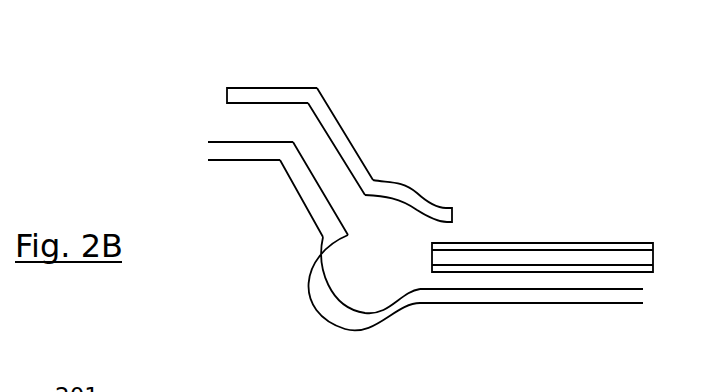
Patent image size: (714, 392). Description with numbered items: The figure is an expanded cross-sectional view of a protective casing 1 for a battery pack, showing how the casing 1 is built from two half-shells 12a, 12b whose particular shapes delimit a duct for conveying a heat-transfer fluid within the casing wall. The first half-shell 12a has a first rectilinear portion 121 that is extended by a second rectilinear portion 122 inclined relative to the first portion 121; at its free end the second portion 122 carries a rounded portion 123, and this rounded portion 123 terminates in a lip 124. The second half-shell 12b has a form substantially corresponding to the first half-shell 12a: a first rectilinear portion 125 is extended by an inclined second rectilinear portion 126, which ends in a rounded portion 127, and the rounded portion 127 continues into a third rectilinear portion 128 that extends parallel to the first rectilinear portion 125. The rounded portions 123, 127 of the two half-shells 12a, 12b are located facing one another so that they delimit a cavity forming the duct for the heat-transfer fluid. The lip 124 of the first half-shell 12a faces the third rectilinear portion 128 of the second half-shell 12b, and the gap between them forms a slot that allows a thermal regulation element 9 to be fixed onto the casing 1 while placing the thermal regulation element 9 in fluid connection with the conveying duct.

The protective casing 1 is at (157, 127).
The thermal regulation element 9 is at (625, 260).
The first half-shell 12a is at (484, 185).
The second half-shell 12b is at (58, 0).
The first rectilinear portion 121 is at (258, 99).
The second rectilinear portion 122 is at (329, 131).
The rounded portion 123 is at (402, 193).
The lip 124 is at (447, 211).
The first rectilinear portion 125 is at (225, 152).
The second rectilinear portion 126 is at (298, 168).
The rounded portion 127 is at (327, 298).
The third rectilinear portion 128 is at (547, 293).